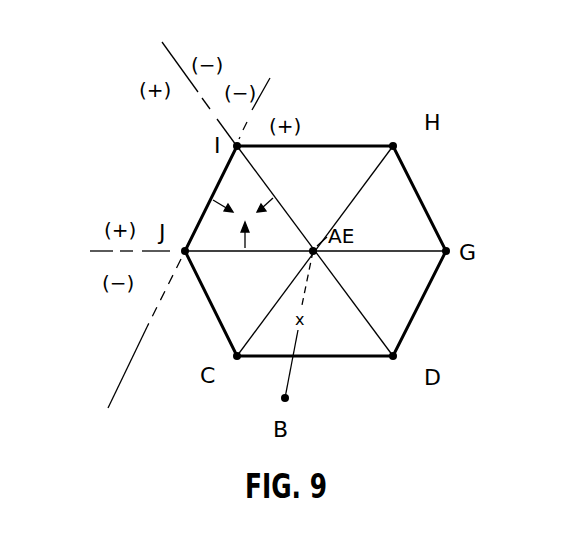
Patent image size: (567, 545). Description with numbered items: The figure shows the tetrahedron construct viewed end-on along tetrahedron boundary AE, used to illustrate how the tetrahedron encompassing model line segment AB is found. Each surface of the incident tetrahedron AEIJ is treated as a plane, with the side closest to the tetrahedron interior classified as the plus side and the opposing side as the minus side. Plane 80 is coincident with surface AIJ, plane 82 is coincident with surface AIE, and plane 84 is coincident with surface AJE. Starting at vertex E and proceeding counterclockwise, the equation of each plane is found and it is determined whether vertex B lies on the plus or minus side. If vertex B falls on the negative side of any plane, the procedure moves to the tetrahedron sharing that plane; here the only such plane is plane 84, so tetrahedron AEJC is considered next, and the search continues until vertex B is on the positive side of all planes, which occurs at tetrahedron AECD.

The plane 80 is at (263, 90).
The plane 82 is at (170, 50).
The plane 84 is at (93, 248).